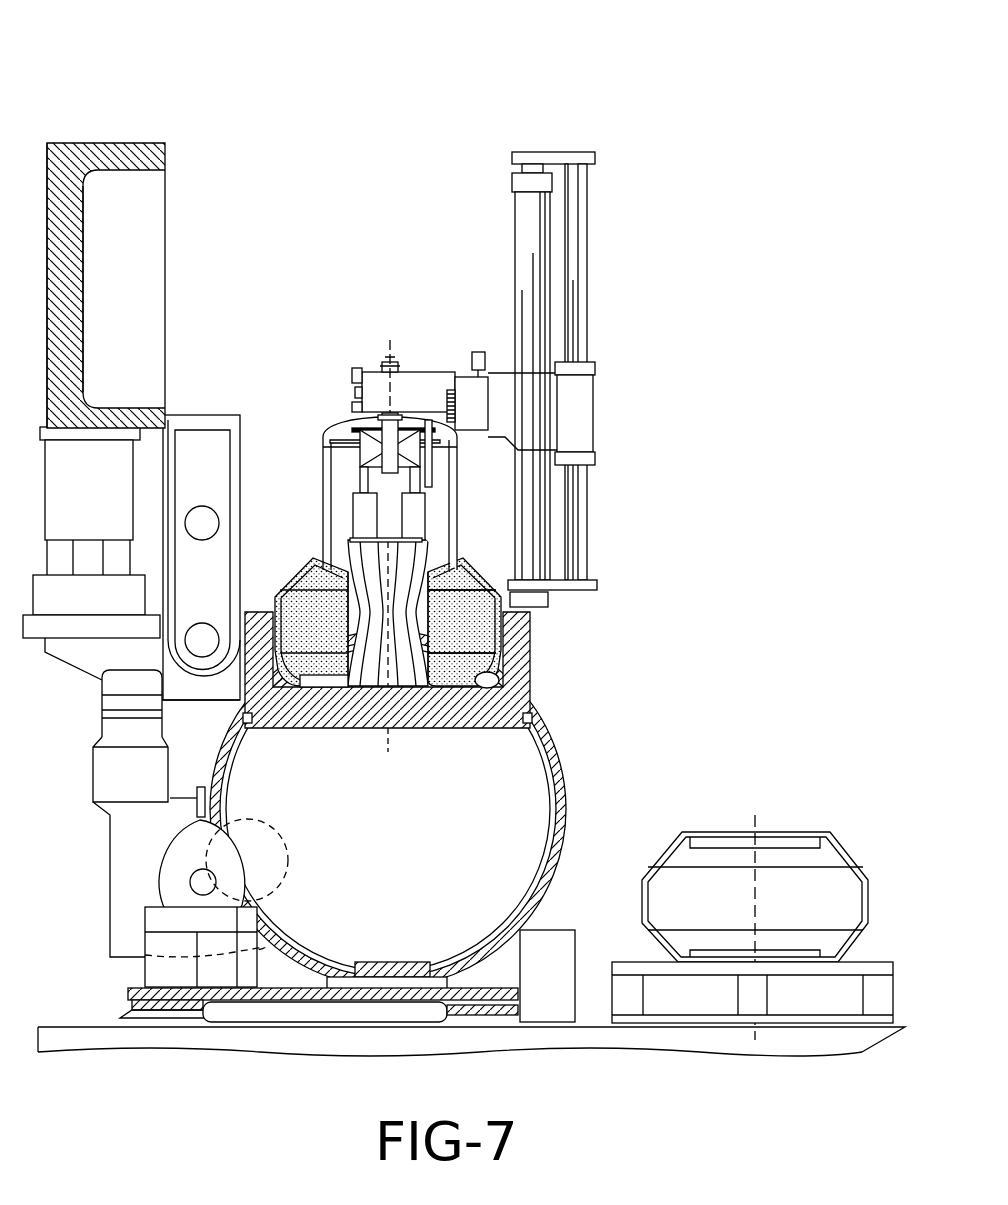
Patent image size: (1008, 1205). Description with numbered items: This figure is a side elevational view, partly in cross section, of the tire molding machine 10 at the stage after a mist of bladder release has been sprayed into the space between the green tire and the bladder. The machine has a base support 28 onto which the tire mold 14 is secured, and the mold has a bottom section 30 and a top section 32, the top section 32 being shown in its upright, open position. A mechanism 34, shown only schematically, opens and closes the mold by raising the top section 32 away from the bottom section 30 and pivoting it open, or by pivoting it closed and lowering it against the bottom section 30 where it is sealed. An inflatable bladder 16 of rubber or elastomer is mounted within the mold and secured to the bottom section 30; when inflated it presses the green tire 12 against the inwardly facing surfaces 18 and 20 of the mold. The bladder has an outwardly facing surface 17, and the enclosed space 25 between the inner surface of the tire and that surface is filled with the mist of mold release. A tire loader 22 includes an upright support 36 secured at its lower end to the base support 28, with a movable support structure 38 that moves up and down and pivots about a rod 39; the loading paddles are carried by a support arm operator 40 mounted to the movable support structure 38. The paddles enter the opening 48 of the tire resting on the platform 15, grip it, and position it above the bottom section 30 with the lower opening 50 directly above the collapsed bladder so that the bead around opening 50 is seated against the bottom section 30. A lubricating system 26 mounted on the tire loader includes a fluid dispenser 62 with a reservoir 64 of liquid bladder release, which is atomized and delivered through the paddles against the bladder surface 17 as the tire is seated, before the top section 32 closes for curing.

The tire molding machine 10 is at (269, 108).
The green tire 12 is at (561, 781).
The tire mold 14 is at (410, 748).
The platform 15 is at (622, 962).
The inflatable bladder 16 is at (355, 622).
The outwardly facing surface 17 is at (410, 622).
The inwardly facing surface 18 is at (492, 673).
The inwardly facing surface 20 is at (106, 285).
The tire loader 22 is at (584, 379).
The enclosed space 25 is at (450, 607).
The lubricating system 26 is at (436, 382).
The base support 28 is at (495, 968).
The bottom section 30 is at (343, 700).
The top section 32 is at (70, 328).
The mechanism 34 is at (76, 734).
The upright support 36 is at (615, 414).
The movable support structure 38 is at (369, 384).
The rod 39 is at (578, 543).
The support arm operator 40 is at (376, 433).
The opening 48 is at (797, 840).
The opening 50 is at (797, 953).
The fluid dispenser 62 is at (477, 422).
The reservoir 64 is at (476, 352).